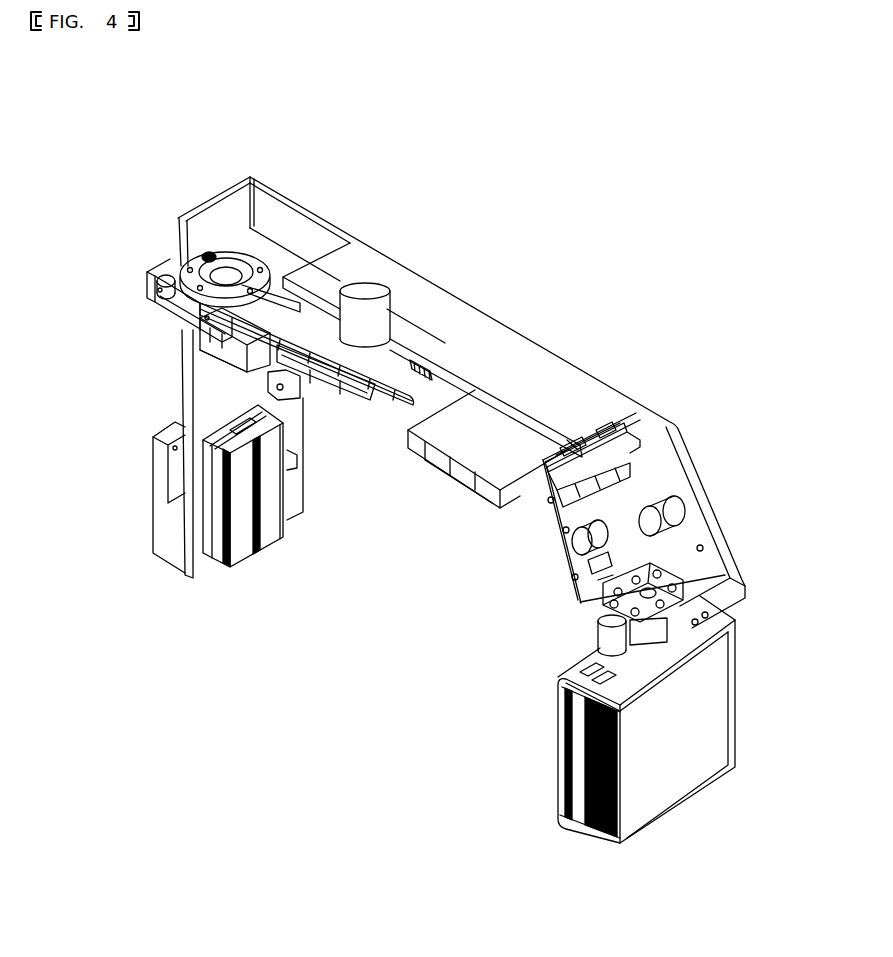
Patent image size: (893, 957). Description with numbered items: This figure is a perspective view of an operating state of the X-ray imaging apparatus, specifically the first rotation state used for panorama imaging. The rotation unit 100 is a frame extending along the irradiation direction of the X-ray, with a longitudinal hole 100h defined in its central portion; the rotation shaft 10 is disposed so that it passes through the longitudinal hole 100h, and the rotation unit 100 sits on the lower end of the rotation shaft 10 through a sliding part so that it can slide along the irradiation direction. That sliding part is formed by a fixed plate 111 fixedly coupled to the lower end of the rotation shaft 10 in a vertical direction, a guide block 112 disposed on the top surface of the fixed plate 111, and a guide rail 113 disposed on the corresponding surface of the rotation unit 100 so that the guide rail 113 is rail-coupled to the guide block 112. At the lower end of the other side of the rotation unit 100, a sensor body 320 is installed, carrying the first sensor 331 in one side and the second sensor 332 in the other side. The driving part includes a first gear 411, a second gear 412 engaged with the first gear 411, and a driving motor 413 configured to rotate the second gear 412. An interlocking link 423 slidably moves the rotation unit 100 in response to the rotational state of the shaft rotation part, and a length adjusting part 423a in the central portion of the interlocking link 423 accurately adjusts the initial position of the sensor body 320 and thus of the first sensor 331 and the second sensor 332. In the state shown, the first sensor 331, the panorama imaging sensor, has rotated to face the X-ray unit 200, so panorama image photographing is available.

The rotation unit 100 is at (553, 385).
The longitudinal hole 100h is at (410, 306).
The rotation shaft 10 is at (395, 288).
The fixed plate 111 is at (413, 343).
The guide block 112 is at (330, 385).
The guide rail 113 is at (393, 407).
The X-ray unit 200 is at (660, 772).
The sensor body 320 is at (183, 402).
The first sensor 331 is at (240, 550).
The second sensor 332 is at (165, 525).
The first gear 411 is at (172, 278).
The second gear 412 is at (157, 315).
The driving motor 413 is at (243, 345).
The interlocking link 423 is at (300, 205).
The length adjusting part 423a is at (320, 277).